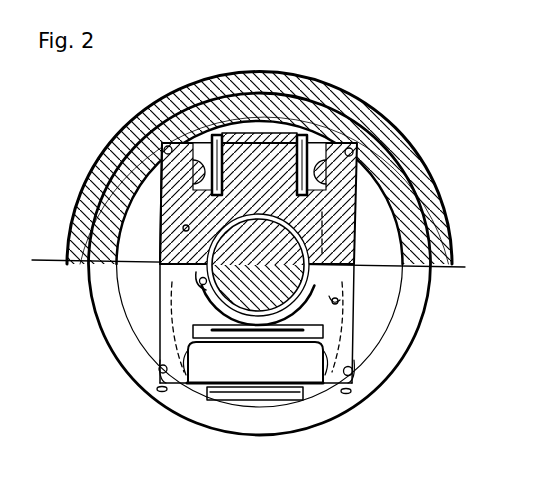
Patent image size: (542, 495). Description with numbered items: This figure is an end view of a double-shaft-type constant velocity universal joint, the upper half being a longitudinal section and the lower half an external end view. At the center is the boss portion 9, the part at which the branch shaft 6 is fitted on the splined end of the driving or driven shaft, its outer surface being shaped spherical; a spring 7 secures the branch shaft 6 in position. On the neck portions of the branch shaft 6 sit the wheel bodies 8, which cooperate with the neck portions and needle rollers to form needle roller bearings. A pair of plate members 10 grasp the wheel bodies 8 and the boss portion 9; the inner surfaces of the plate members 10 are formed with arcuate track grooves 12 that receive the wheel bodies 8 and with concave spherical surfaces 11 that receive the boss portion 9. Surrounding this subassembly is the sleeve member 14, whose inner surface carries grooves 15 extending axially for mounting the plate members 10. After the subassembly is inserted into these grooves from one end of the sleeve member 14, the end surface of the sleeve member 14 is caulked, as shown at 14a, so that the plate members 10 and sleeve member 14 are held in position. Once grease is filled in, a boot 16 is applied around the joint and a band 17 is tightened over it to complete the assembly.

The branch shaft 6 is at (290, 92).
The spring 7 is at (199, 284).
The wheel body 8 is at (352, 121).
The boss portion 9 is at (166, 242).
The plate member 10 is at (358, 191).
The concave spherical surface 11 is at (185, 227).
The arcuate track groove 12 is at (197, 443).
The sleeve member 14 is at (334, 122).
The caulked end surface 14a is at (159, 394).
The groove 15 is at (166, 141).
The boot 16 is at (113, 157).
The band 17 is at (257, 74).